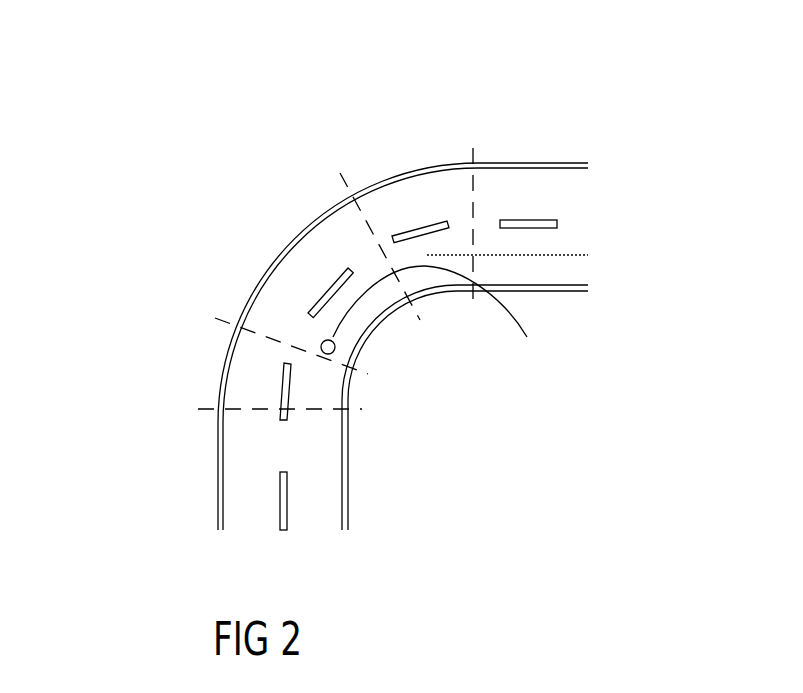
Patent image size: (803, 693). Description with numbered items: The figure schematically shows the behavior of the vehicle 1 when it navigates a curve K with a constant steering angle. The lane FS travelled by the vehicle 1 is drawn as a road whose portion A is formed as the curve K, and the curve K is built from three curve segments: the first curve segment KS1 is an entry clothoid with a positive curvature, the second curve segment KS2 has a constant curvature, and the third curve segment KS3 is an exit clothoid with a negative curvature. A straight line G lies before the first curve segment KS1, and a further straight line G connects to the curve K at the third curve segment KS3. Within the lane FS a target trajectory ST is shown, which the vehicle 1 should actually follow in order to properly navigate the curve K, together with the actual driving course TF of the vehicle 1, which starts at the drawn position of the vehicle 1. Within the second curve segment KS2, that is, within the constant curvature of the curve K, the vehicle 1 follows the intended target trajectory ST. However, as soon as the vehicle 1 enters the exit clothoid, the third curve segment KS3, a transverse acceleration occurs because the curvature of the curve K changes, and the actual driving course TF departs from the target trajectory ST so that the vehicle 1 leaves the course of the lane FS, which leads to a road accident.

The straight line G is at (528, 146).
The portion of the lane A is at (218, 282).
The curve K is at (398, 378).
The first curve segment KS1 is at (199, 362).
The second curve segment KS2 is at (271, 217).
The third curve segment KS3 is at (397, 146).
The target trajectory ST is at (568, 255).
The lane FS is at (572, 262).
The actual driving course TF is at (441, 320).
The vehicle 1 is at (335, 350).